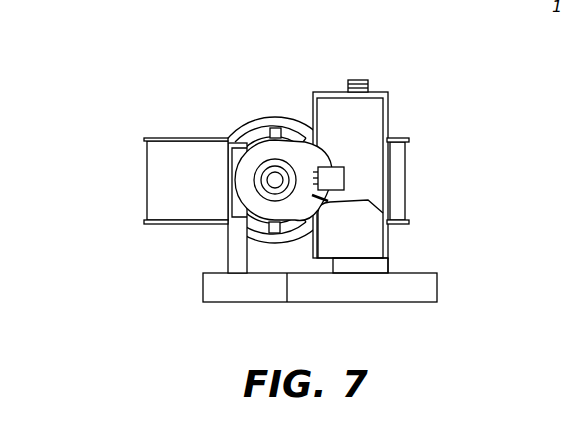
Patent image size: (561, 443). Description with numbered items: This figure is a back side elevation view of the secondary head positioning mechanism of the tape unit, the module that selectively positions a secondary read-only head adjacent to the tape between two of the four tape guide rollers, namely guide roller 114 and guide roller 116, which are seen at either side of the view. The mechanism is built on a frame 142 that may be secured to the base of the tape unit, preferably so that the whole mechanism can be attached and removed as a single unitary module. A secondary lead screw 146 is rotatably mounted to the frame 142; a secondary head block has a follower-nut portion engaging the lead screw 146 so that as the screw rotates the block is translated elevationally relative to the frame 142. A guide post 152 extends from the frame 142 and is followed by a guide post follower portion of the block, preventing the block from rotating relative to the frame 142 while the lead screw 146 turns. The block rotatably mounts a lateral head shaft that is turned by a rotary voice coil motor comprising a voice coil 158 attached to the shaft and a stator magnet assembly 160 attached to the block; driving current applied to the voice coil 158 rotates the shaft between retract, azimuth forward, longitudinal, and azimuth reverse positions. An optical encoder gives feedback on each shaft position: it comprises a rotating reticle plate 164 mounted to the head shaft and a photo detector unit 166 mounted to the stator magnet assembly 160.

The tape guide roller 116 is at (160, 138).
The guide post 152 is at (240, 144).
The photo detector unit 166 is at (339, 158).
The secondary lead screw 146 is at (364, 80).
The tape guide roller 114 is at (394, 137).
The voice coil 158 is at (384, 216).
The rotating reticle plate 164 is at (345, 199).
The stator magnet assembly 160 is at (372, 245).
The frame 142 is at (437, 291).